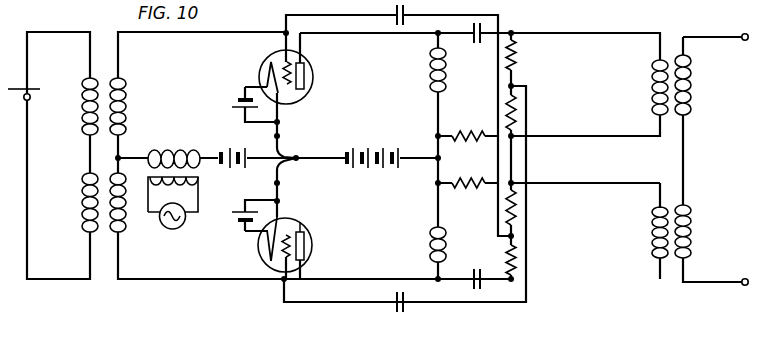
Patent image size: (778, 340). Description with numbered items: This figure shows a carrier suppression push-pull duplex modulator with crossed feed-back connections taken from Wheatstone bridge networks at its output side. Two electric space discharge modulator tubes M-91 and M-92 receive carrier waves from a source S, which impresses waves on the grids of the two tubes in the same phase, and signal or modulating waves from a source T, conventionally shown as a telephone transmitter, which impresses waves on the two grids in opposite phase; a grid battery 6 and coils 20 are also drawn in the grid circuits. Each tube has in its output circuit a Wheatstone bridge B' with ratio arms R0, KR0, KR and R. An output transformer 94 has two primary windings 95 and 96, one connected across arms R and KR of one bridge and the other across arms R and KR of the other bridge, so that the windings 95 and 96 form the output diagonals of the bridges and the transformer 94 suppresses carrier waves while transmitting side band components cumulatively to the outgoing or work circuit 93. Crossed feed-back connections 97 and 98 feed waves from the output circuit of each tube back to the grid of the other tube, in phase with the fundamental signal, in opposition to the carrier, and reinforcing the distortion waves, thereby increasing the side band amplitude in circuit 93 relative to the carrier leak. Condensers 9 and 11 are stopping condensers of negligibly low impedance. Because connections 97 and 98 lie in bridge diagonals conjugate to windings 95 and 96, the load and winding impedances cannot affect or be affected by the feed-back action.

The source of signal or modulating waves T is at (30, 92).
The source of carrier waves S is at (180, 227).
The modulator tube M-91 is at (270, 54).
The modulator tube M-92 is at (268, 260).
The bridge ratio arm R0 is at (290, 86).
The bridge ratio arm R is at (518, 58).
The bridge ratio arm KR is at (521, 115).
The bridge ratio arm KR0 is at (467, 133).
The inductance coil 20 is at (430, 62).
The stopping condenser 11 is at (478, 45).
The stopping condenser 9 is at (396, 20).
The crossed feed-back connection 98 is at (332, 17).
The crossed feed-back connection 97 is at (372, 303).
The Wheatstone bridge B' is at (350, 158).
The grid bias battery 6 is at (347, 168).
The output transformer 94 is at (670, 53).
The primary winding 95 is at (657, 84).
The primary winding 96 is at (657, 235).
The outgoing or work circuit 93 is at (718, 40).